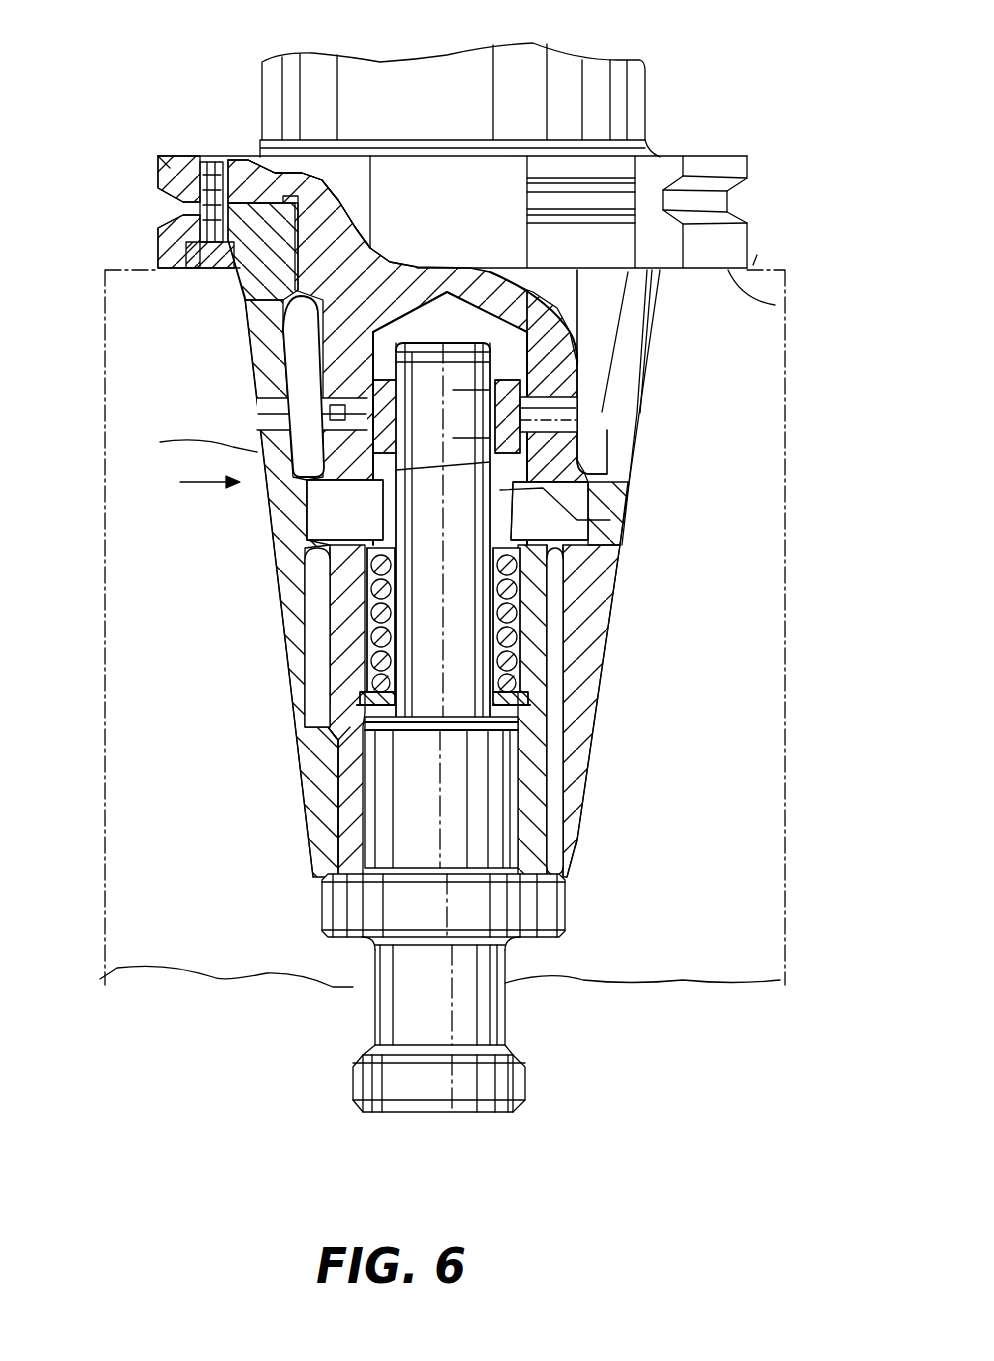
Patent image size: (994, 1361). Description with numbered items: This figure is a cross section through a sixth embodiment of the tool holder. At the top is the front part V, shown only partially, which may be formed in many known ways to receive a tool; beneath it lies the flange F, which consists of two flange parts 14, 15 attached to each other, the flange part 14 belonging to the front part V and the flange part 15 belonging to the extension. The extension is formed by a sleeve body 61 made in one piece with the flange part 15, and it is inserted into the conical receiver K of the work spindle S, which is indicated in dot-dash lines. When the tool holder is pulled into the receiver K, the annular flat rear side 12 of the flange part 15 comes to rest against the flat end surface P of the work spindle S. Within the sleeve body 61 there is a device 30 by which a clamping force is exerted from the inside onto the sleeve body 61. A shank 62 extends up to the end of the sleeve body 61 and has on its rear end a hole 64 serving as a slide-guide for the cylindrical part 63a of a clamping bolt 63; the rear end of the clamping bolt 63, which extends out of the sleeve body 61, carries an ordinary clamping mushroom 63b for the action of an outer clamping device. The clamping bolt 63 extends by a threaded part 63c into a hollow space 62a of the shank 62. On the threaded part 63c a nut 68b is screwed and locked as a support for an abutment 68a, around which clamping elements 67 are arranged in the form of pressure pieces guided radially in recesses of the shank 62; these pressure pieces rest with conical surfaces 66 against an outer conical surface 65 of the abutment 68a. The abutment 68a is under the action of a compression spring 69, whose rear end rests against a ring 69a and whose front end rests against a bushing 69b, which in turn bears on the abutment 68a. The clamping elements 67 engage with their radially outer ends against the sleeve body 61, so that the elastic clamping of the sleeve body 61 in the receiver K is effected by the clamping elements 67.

The front part V is at (601, 78).
The flange F is at (763, 151).
The flat end surface P is at (769, 240).
The annular flat rear side 12 is at (673, 626).
The work spindle S is at (162, 293).
The flange part 14 is at (160, 158).
The flange part 15 is at (160, 242).
The receiver K is at (196, 444).
The device 30 is at (186, 483).
The sleeve body 61 is at (300, 632).
The shank 62 is at (336, 325).
The hollow space 62a is at (515, 340).
The clamping bolt 63 is at (455, 643).
The cylindrical part 63a is at (473, 797).
The clamping mushroom 63b is at (493, 1013).
The threaded part 63c is at (520, 373).
The hole 64 is at (365, 822).
The outer conical surface 65 is at (588, 483).
The conical surfaces 66 is at (610, 520).
The clamping elements 67 is at (317, 518).
The abutment 68a is at (560, 462).
The nut 68b is at (545, 395).
The compression spring 69 is at (370, 677).
The ring 69a is at (390, 700).
The bushing 69b is at (330, 557).